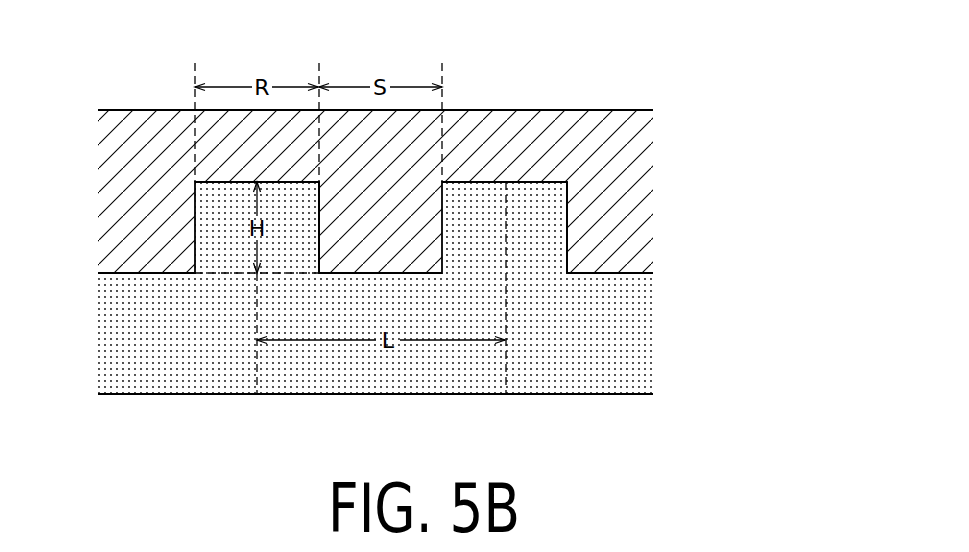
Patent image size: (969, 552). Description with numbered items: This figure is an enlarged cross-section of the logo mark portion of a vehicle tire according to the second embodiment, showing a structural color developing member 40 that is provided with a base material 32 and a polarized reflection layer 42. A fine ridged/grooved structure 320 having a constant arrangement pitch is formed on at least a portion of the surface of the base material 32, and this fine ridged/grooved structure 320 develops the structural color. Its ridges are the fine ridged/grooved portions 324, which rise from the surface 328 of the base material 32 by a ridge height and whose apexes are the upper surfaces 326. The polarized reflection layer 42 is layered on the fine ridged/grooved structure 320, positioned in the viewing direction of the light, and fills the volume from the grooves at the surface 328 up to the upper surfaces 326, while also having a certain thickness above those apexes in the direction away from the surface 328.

The structural color developing member 40 is at (604, 76).
The polarized reflection layer 42 is at (645, 137).
The base material 32 is at (630, 360).
The fine ridged/grooved structure 320 is at (600, 204).
The fine ridged/grooved portions 324 is at (567, 230).
The upper surfaces 326 is at (530, 182).
The surface 328 is at (610, 275).